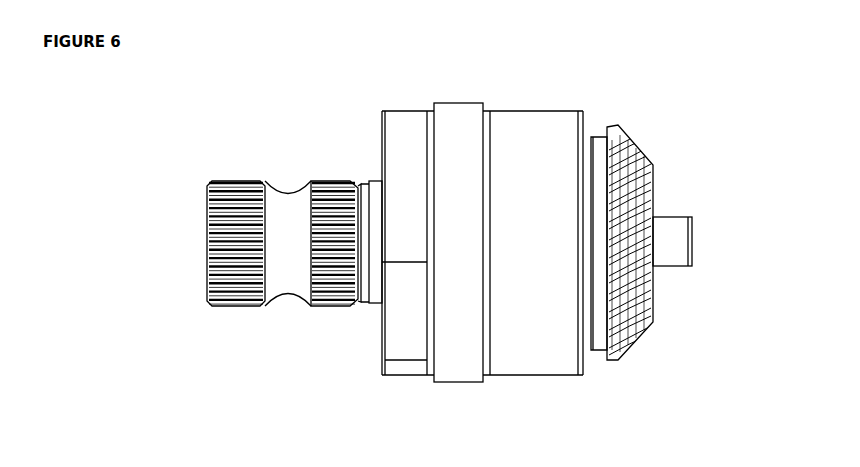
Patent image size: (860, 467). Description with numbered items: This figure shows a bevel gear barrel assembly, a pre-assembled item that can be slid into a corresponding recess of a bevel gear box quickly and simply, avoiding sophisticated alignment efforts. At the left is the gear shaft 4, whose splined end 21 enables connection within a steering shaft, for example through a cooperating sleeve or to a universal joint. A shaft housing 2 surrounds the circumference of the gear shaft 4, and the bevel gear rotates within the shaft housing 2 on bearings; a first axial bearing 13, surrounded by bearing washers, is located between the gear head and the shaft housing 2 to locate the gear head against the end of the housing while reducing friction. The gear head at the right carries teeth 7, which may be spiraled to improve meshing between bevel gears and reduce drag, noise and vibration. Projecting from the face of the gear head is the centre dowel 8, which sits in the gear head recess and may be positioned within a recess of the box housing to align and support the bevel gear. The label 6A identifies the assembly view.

The splined end 21 is at (240, 322).
The gear shaft 4 is at (297, 326).
The shaft housing 2 is at (501, 302).
The teeth 7 is at (634, 182).
The centre dowel 8 is at (661, 247).
The first axial bearing 13 is at (643, 466).
The assembly 6A is at (446, 442).